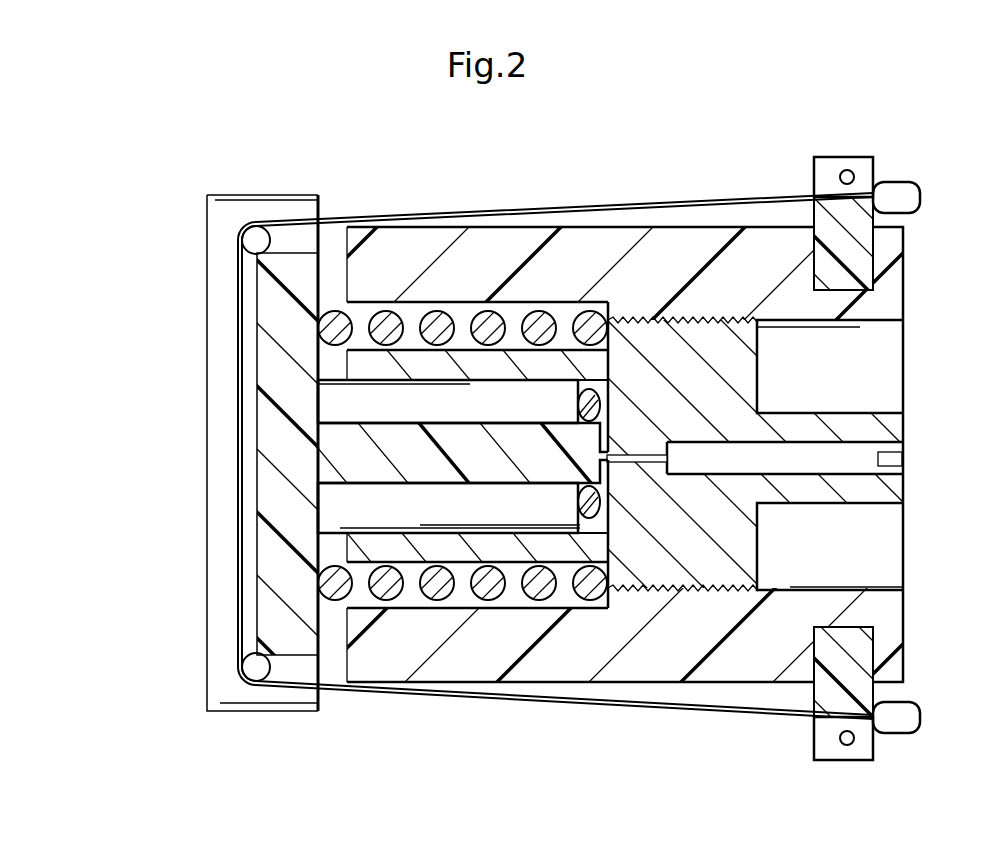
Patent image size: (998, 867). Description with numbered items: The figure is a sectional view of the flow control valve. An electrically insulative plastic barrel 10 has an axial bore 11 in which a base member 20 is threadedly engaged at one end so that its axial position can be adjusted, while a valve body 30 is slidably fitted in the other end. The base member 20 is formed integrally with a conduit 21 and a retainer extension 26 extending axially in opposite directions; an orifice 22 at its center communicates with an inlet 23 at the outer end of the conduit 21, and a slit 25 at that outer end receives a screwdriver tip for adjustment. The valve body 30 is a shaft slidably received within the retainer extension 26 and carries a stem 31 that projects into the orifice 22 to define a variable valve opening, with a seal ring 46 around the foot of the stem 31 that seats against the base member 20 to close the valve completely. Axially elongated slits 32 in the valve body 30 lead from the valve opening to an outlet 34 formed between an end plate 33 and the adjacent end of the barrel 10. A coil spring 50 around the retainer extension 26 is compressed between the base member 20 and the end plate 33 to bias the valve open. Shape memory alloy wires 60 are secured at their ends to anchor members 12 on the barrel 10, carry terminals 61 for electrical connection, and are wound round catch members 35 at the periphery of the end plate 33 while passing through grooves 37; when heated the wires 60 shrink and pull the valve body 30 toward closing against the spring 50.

The barrel 10 is at (740, 211).
The axial bore 11 is at (880, 334).
The anchor member 12 is at (873, 762).
The base member 20 is at (738, 565).
The conduit 21 is at (727, 463).
The orifice 22 is at (652, 460).
The inlet 23 is at (897, 470).
The slit 25 is at (893, 458).
The retainer extension 26 is at (467, 563).
The valve body 30 is at (518, 401).
The stem 31 is at (607, 452).
The slits 32 is at (432, 397).
The end plate 33 is at (207, 712).
The outlet 34 is at (332, 253).
The catch member 35 is at (256, 670).
The grooves 37 is at (295, 667).
The seal ring 46 is at (590, 512).
The coil spring 50 is at (386, 590).
The wire 60 is at (613, 202).
The terminal 61 is at (910, 718).